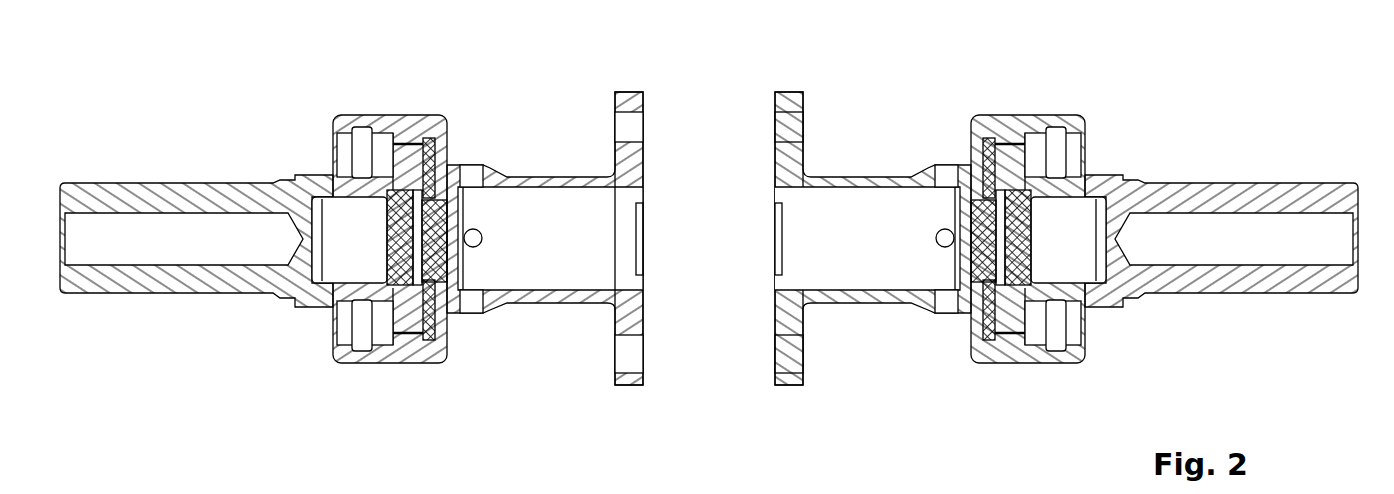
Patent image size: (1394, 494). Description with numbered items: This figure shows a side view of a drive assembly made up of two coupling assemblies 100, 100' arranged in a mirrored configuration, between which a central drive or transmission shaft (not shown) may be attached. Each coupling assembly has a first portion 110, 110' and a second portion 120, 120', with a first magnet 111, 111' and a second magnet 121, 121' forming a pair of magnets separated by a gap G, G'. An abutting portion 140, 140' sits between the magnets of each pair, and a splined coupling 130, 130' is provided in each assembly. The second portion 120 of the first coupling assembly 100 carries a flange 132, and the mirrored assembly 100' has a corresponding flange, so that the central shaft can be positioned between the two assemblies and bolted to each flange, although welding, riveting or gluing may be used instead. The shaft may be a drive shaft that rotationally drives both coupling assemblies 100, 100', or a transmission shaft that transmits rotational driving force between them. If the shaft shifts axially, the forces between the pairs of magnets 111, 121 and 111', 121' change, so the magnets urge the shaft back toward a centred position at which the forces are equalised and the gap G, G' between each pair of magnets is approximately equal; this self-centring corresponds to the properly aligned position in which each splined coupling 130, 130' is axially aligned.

The coupling assembly 100 is at (1066, 223).
The coupling assembly 100' is at (351, 235).
The first portion 110 is at (1221, 179).
The first portion 110' is at (196, 170).
The first magnet 111 is at (1024, 170).
The first magnet 111' is at (370, 163).
The second portion 120 is at (940, 210).
The second portion 120' is at (477, 217).
The second magnet 121 is at (977, 163).
The second magnet 121' is at (438, 169).
The splined coupling 130 is at (1038, 269).
The splined coupling 130' is at (382, 281).
The flange 132 is at (623, 92).
The abutting portion 140 is at (953, 275).
The abutting portion 140' is at (481, 280).
The gap G is at (1086, 274).
The gap G' is at (355, 270).